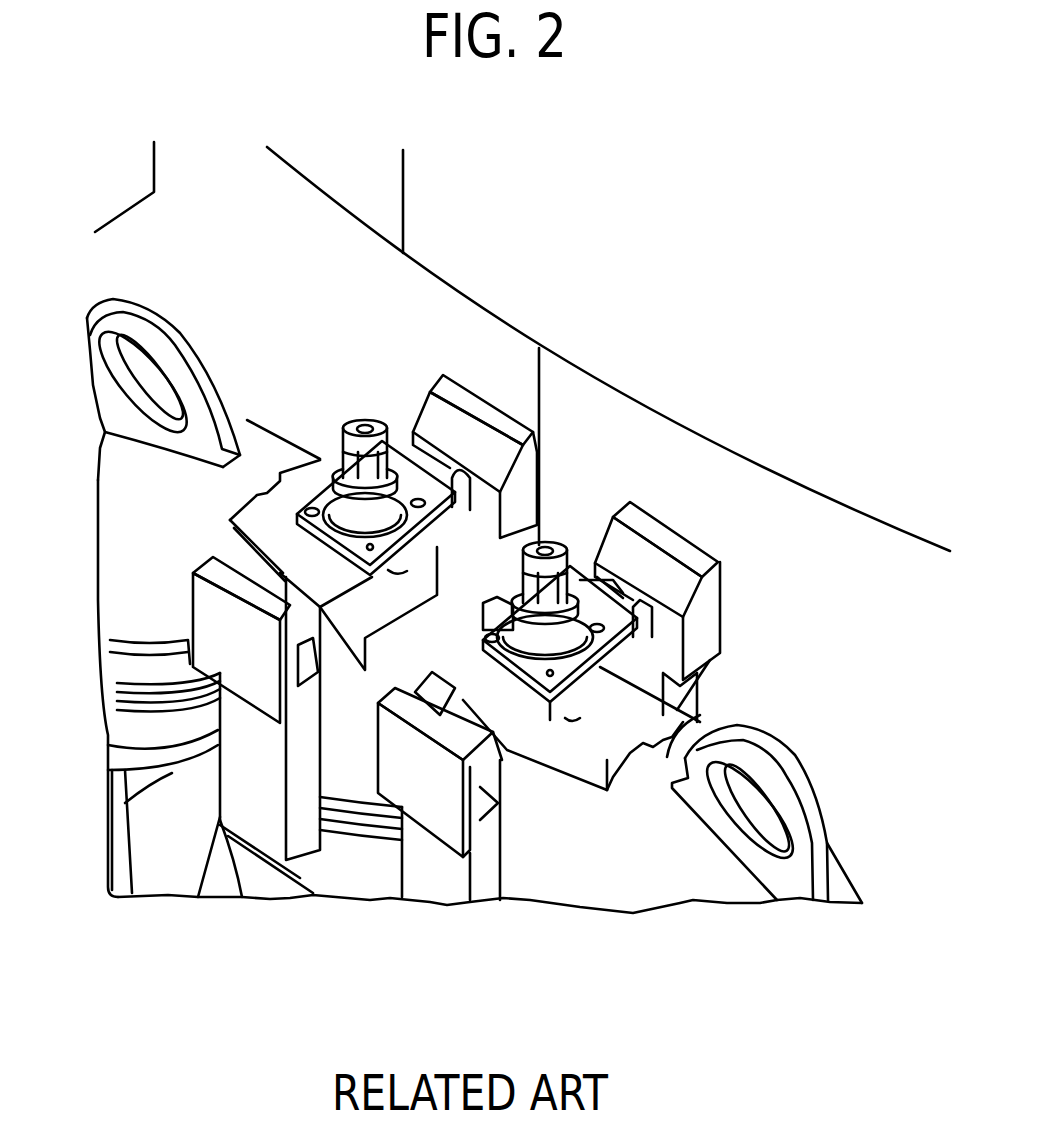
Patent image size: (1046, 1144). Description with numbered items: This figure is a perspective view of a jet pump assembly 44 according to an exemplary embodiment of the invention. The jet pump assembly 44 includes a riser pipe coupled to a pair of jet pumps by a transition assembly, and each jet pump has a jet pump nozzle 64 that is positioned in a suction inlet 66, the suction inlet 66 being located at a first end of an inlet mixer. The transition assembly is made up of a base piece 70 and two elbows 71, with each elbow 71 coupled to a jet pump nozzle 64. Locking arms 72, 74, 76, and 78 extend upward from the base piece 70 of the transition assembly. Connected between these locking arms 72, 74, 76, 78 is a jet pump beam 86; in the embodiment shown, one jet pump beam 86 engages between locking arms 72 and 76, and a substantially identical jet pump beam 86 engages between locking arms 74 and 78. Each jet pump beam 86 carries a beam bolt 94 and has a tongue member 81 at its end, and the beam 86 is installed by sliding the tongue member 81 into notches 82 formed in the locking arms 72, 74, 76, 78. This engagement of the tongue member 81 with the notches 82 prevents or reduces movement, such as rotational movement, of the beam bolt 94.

The jet pump assembly 44 is at (246, 358).
The jet pump nozzle 64 is at (128, 803).
The suction inlet 66 is at (172, 873).
The base piece 70 is at (305, 875).
The elbow 71 is at (256, 416).
The locking arm 72 is at (455, 385).
The locking arm 74 is at (684, 547).
The locking arm 76 is at (233, 587).
The locking arm 78 is at (447, 740).
The tongue member 81 is at (647, 640).
The notch 82 is at (582, 577).
The jet pump beam 86 is at (507, 713).
The beam bolt 94 is at (365, 424).